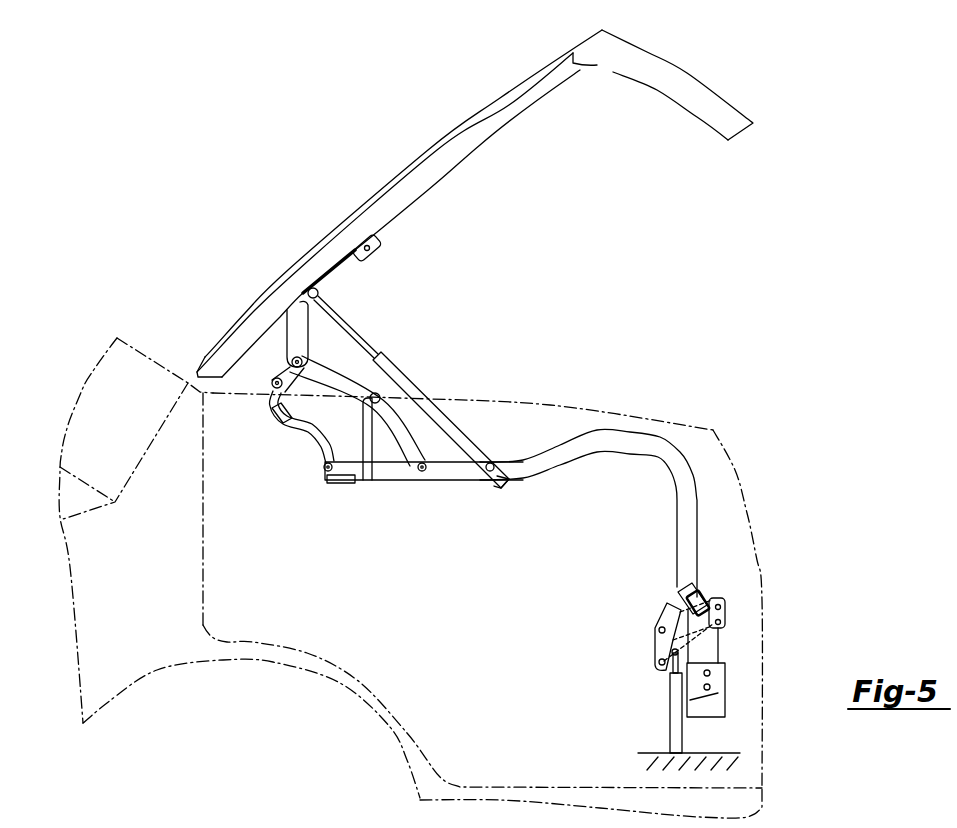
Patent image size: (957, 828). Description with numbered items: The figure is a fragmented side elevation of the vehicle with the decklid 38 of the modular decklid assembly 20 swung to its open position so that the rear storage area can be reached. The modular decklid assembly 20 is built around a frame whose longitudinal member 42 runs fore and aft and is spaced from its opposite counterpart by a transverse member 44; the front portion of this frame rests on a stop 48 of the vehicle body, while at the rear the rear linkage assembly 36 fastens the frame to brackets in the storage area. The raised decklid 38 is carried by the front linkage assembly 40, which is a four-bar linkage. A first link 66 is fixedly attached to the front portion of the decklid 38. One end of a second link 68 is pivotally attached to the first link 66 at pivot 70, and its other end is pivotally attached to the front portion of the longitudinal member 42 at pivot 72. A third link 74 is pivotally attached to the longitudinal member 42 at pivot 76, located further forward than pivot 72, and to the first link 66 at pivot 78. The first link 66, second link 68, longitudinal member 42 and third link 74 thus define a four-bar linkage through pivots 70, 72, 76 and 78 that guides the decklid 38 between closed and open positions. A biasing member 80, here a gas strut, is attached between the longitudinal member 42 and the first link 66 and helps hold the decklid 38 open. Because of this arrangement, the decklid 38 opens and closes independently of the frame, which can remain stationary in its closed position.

The modular decklid assembly 20 is at (330, 170).
The rear linkage assembly 36 is at (620, 676).
The decklid 38 is at (440, 146).
The front linkage assembly 40 is at (457, 364).
The longitudinal member 42 is at (525, 475).
The transverse member 44 is at (373, 452).
The stop 48 is at (340, 484).
The first link 66 is at (347, 270).
The second link 68 is at (312, 362).
The pivot 70 is at (295, 357).
The pivot 72 is at (423, 471).
The third link 74 is at (275, 412).
The pivot 76 is at (323, 470).
The pivot 78 is at (272, 382).
The biasing member 80 is at (397, 370).